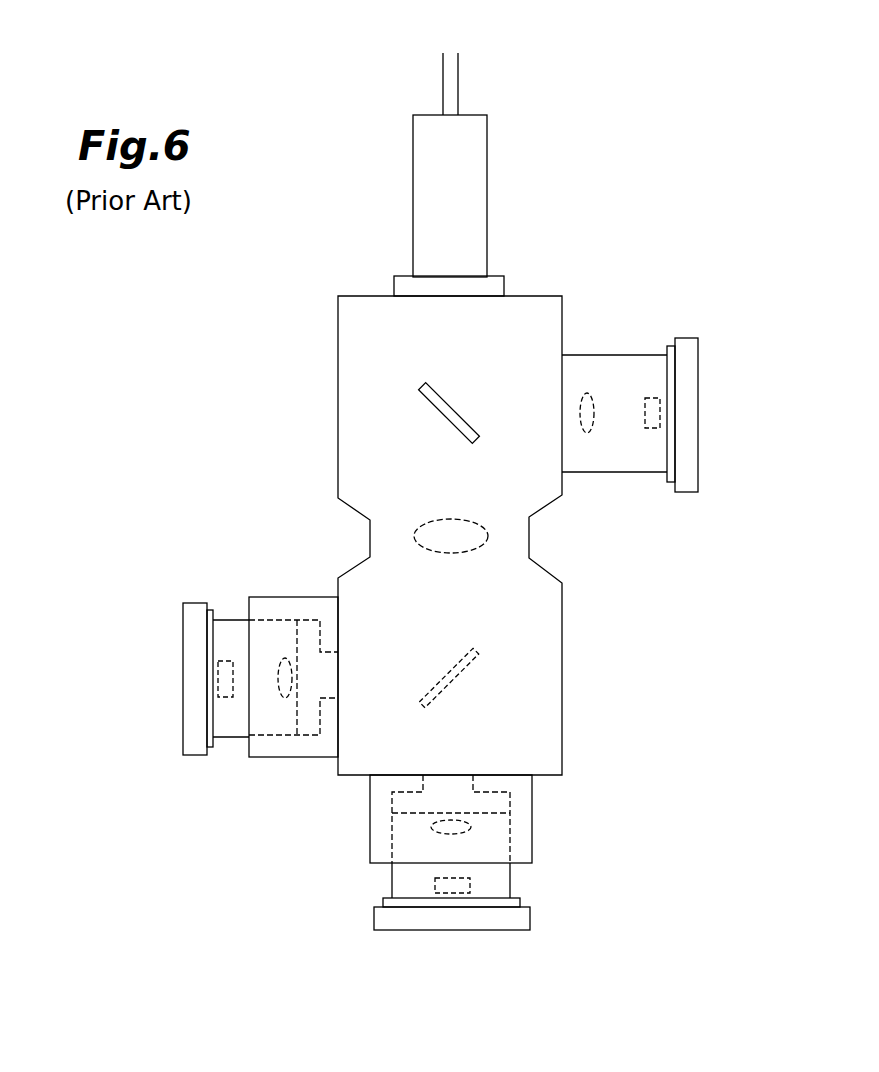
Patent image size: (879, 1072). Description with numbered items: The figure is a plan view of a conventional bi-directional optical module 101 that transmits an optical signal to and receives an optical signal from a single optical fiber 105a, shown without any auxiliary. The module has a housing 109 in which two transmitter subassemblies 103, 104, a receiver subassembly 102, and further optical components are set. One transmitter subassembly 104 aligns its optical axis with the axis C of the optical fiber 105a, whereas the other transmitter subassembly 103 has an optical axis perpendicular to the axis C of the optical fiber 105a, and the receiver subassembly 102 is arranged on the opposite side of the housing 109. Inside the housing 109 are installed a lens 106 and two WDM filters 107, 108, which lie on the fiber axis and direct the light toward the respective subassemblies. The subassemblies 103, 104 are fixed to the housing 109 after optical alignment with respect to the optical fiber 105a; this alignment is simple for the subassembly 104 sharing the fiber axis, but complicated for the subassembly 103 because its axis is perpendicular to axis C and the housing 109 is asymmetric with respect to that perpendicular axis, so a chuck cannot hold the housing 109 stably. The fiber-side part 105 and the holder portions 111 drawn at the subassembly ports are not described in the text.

The bi-directional optical module 101 is at (622, 178).
The receiver subassembly 102 is at (632, 482).
The transmitter subassembly 103 is at (263, 768).
The transmitter subassembly 104 is at (532, 940).
The light source unit 105 is at (488, 172).
The optical fiber 105a is at (459, 70).
The lens 106 is at (470, 522).
The WDM filter 107 is at (462, 404).
The WDM filter 108 is at (472, 667).
The housing 109 is at (563, 708).
The filter holder block 111 is at (305, 760).